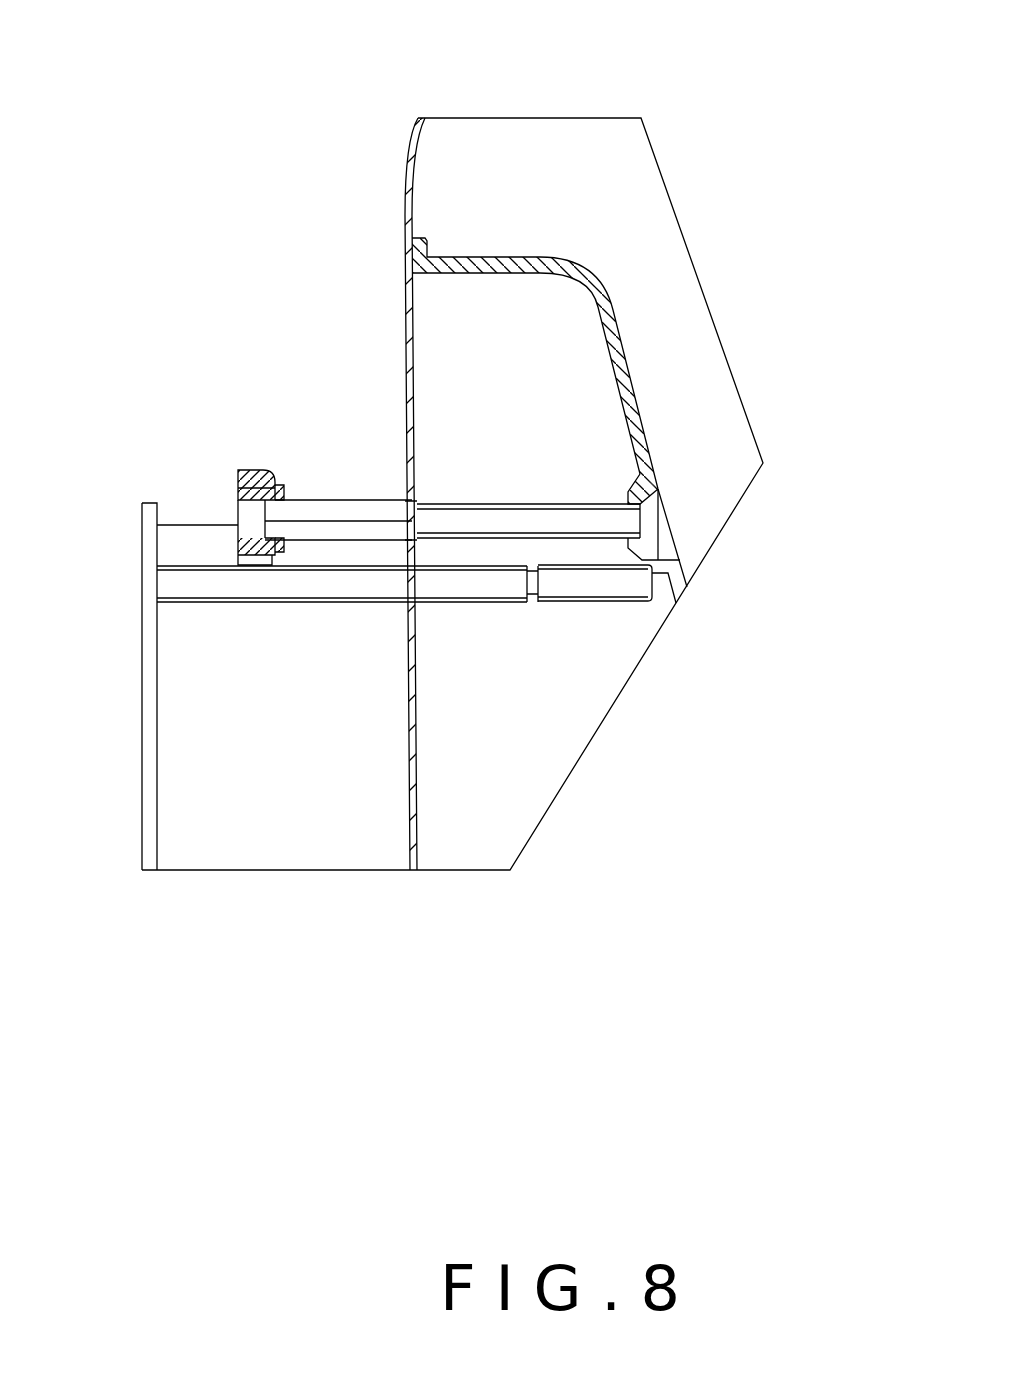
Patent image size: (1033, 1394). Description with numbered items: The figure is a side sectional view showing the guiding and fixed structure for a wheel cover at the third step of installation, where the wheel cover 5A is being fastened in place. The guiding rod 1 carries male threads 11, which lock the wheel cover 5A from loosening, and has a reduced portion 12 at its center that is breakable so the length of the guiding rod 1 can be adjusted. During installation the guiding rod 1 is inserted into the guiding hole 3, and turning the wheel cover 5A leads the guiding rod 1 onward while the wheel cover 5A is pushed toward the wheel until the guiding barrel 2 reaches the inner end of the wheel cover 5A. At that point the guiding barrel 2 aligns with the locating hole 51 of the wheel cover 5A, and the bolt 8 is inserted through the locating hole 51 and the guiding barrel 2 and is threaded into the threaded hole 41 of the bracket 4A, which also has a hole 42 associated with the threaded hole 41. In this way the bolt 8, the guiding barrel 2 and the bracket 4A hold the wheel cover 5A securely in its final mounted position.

The wheel cover 5A is at (547, 136).
The guiding hole 3 is at (410, 655).
The locating hole 51 is at (405, 495).
The guiding barrel 2 is at (347, 498).
The threaded hole 41 is at (237, 502).
The hole 42 is at (282, 482).
The bolt 8 is at (652, 520).
The bracket 4A is at (157, 780).
The male threads 11 is at (305, 603).
The reduced portion 12 is at (535, 600).
The guiding rod 1 is at (606, 603).